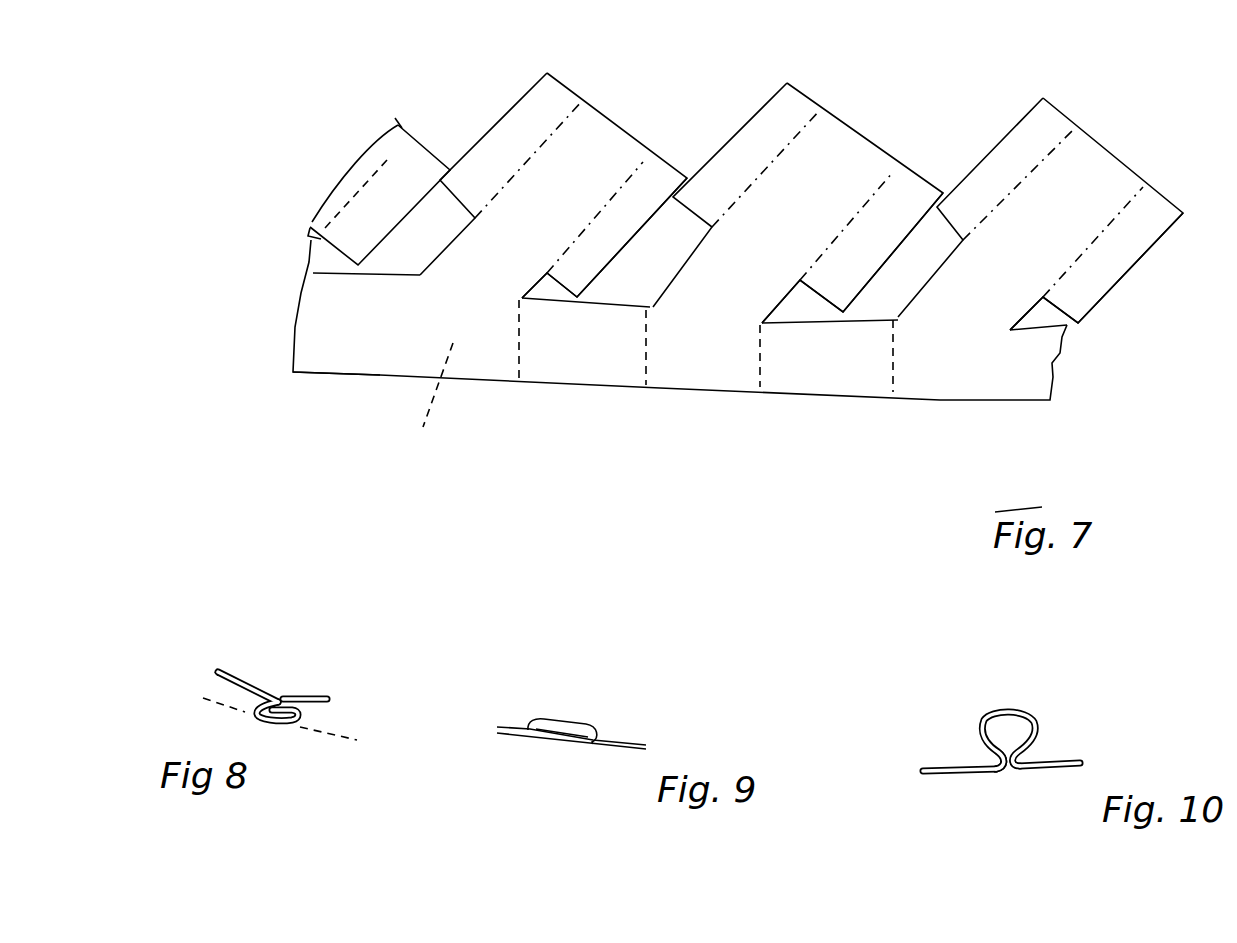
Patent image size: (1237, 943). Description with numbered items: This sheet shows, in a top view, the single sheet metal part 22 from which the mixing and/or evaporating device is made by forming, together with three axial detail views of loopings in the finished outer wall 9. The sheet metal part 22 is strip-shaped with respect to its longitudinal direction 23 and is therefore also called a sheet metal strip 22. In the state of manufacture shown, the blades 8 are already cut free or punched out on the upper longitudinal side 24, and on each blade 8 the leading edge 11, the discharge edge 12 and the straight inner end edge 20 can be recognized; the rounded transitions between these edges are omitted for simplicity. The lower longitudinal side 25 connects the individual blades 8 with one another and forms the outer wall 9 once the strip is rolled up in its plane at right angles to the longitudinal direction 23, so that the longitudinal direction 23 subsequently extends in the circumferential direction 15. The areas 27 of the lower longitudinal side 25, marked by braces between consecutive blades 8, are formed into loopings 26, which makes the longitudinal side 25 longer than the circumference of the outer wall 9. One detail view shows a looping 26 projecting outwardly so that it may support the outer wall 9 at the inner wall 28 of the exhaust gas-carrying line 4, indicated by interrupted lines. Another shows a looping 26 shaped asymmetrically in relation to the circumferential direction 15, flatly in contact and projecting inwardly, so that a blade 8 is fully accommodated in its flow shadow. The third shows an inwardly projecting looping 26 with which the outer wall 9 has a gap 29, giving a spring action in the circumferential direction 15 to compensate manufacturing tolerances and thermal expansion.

In FIG. 8, the exhaust gas-carrying line 4 is at (319, 745).
In FIG. 7, the blade 8 is at (593, 123).
In FIG. 7, the outer wall 9 is at (427, 409).
In FIG. 8, the outer wall 9 is at (245, 685).
In FIG. 9, the outer wall 9 is at (623, 743).
In FIG. 10, the outer wall 9 is at (942, 768).
In FIG. 7, the leading edge 11 is at (498, 117).
In FIG. 7, the discharge edge 12 is at (640, 230).
In FIG. 8, the circumferential direction 15 is at (277, 679).
In FIG. 9, the circumferential direction 15 is at (597, 763).
In FIG. 10, the circumferential direction 15 is at (1045, 752).
In FIG. 7, the straight inner end edge 20 is at (620, 127).
In FIG. 7, the sheet metal part 22 is at (345, 389).
In FIG. 7, the longitudinal direction 23 is at (812, 412).
In FIG. 7, the upper longitudinal side 24 is at (284, 78).
In FIG. 7, the lower longitudinal side 25 is at (280, 278).
In FIG. 8, the looping 26 is at (275, 723).
In FIG. 9, the looping 26 is at (560, 727).
In FIG. 10, the looping 26 is at (1005, 713).
In FIG. 7, the area of the longitudinal side 27 is at (647, 422).
In FIG. 8, the inner wall 28 is at (320, 730).
In FIG. 10, the gap 29 is at (1010, 772).